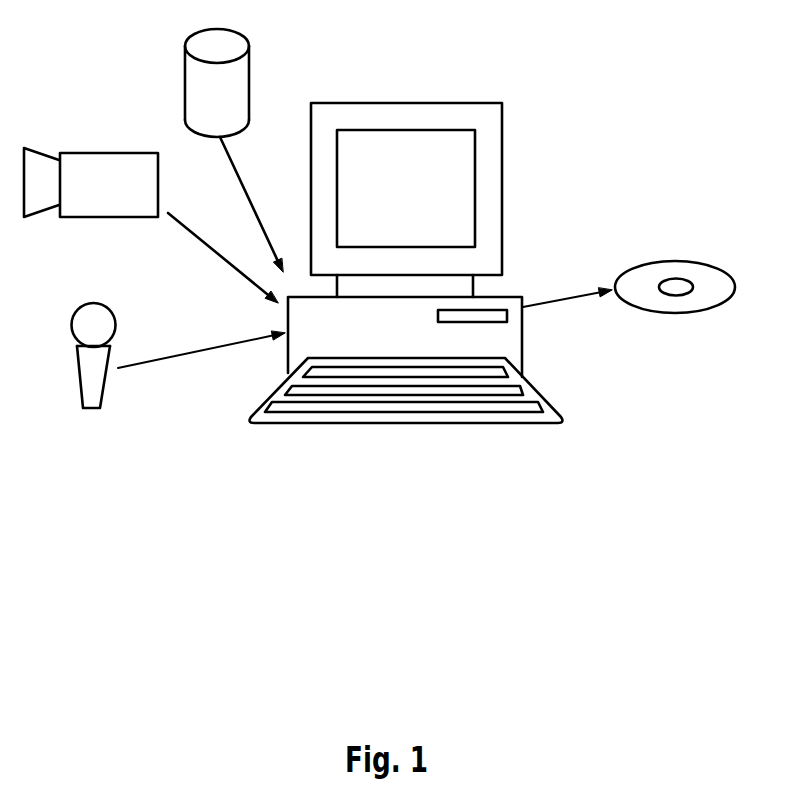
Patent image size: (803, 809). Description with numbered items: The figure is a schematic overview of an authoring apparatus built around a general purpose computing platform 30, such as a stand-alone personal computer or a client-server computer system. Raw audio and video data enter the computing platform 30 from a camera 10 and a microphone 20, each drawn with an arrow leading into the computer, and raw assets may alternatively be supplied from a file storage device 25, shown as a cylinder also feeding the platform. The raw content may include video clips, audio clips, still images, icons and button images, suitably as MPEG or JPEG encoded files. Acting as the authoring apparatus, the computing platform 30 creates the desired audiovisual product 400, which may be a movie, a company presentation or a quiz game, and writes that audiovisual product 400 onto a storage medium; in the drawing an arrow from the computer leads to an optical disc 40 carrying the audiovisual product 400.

The camera 10 is at (106, 160).
The microphone 20 is at (102, 320).
The file storage device 25 is at (242, 82).
The computing platform 30 is at (496, 192).
The optical disc 40 is at (702, 265).
The audiovisual product 400 is at (647, 268).